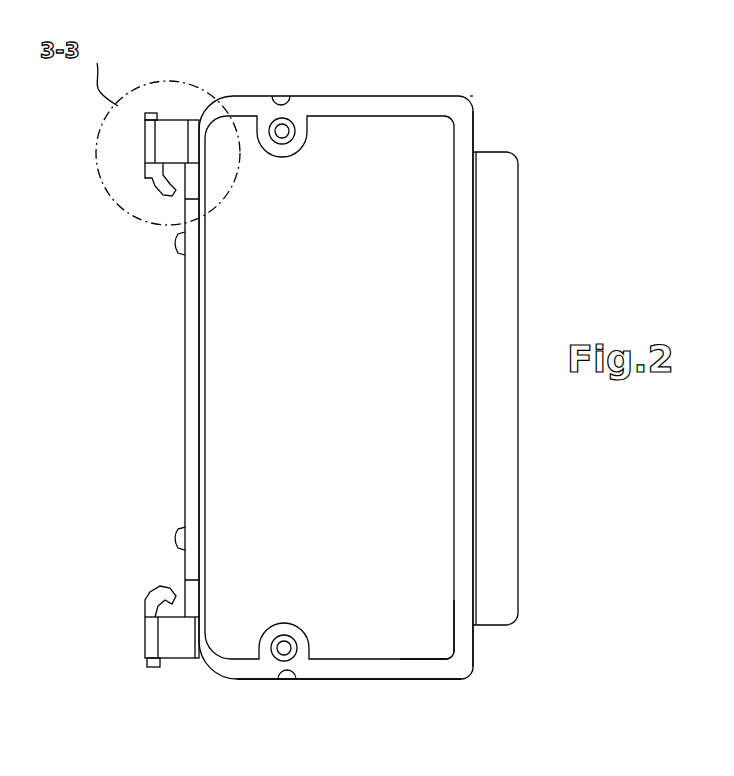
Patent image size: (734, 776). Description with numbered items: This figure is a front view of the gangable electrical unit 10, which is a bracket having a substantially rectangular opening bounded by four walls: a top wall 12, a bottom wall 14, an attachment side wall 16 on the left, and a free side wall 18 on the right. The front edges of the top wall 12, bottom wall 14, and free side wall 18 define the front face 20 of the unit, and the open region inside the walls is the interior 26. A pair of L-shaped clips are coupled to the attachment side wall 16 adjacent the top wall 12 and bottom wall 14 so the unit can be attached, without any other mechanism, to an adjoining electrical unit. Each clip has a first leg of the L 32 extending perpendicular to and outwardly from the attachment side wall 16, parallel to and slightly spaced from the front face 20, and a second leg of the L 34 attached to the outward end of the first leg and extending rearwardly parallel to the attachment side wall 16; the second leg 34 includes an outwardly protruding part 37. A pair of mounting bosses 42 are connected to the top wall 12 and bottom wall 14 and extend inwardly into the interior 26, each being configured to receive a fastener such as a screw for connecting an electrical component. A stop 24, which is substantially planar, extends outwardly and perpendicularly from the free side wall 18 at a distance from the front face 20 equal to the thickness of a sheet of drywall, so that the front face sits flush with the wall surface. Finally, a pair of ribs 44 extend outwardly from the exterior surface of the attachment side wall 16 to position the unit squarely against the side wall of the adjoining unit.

The gangable electrical unit 10 is at (592, 79).
The top wall 12 is at (355, 101).
The bottom wall 14 is at (425, 662).
The attachment side wall 16 is at (193, 492).
The free side wall 18 is at (479, 651).
The front face 20 is at (378, 667).
The stop 24 is at (503, 496).
The interior 26 is at (337, 367).
The first leg of the L 32 is at (176, 133).
The second leg of the L 34 is at (147, 178).
The outwardly protruding part 37 is at (148, 113).
The mounting bosses 42 is at (290, 141).
The ribs 44 is at (173, 246).